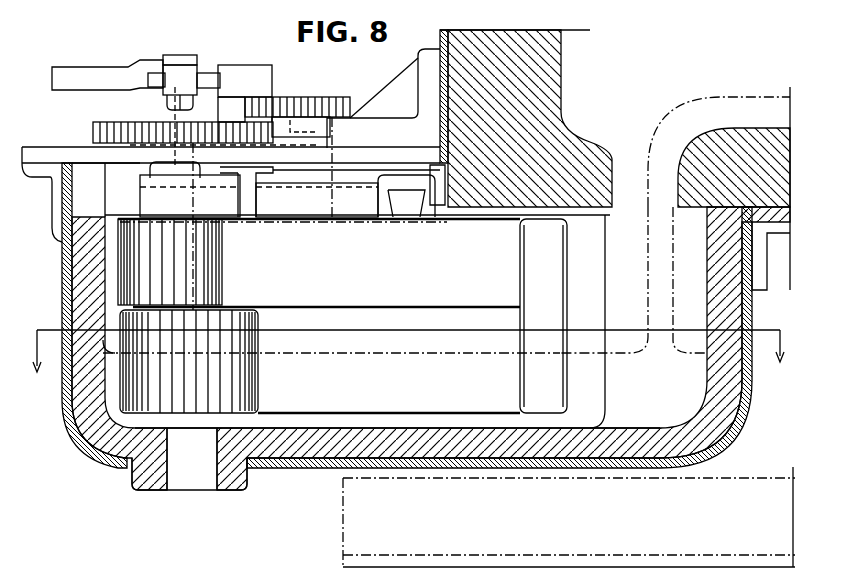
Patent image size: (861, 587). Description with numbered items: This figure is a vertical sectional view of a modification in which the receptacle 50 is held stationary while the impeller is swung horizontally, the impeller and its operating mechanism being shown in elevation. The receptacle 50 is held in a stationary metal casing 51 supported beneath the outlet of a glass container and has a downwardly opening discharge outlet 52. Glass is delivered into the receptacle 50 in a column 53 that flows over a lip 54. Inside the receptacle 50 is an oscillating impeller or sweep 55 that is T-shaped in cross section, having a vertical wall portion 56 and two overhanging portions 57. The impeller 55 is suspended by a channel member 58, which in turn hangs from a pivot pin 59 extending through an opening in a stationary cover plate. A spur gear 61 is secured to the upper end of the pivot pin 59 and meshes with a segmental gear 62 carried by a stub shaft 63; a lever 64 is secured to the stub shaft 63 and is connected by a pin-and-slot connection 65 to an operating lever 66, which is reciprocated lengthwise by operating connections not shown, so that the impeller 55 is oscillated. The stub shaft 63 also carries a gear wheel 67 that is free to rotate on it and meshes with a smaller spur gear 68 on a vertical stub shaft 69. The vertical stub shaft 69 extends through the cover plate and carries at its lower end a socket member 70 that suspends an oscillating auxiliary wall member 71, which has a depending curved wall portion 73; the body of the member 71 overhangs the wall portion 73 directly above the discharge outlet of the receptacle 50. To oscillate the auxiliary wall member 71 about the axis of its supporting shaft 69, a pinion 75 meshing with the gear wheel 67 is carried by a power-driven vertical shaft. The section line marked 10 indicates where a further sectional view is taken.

The section line 10- 10 is at (413, 347).
The receptacle 50 is at (478, 445).
The stationary metal casing 51 is at (742, 397).
The discharge outlet 52 is at (190, 477).
The column 53 is at (647, 252).
The lip 54 is at (688, 157).
The oscillating impeller or sweep 55 is at (342, 316).
The vertical wall portion 56 is at (323, 403).
The overhanging portions 57 is at (327, 297).
The channel member 58 is at (355, 180).
The pivot pin 59 is at (297, 100).
The spur gear 61 is at (340, 112).
The segmental gear 62 is at (224, 63).
The stub shaft 63 is at (252, 68).
The lever 64 is at (165, 80).
The pin-and-slot connection 65 is at (180, 55).
The operating lever 66 is at (82, 63).
The gear wheel 67 is at (270, 113).
The spur gear 68 is at (185, 132).
The vertical stub shaft 69 is at (190, 226).
The socket member 70 is at (150, 205).
The oscillating auxiliary wall member 71 is at (152, 260).
The depending curved wall portion 73 is at (160, 378).
The pinion 75 is at (108, 122).